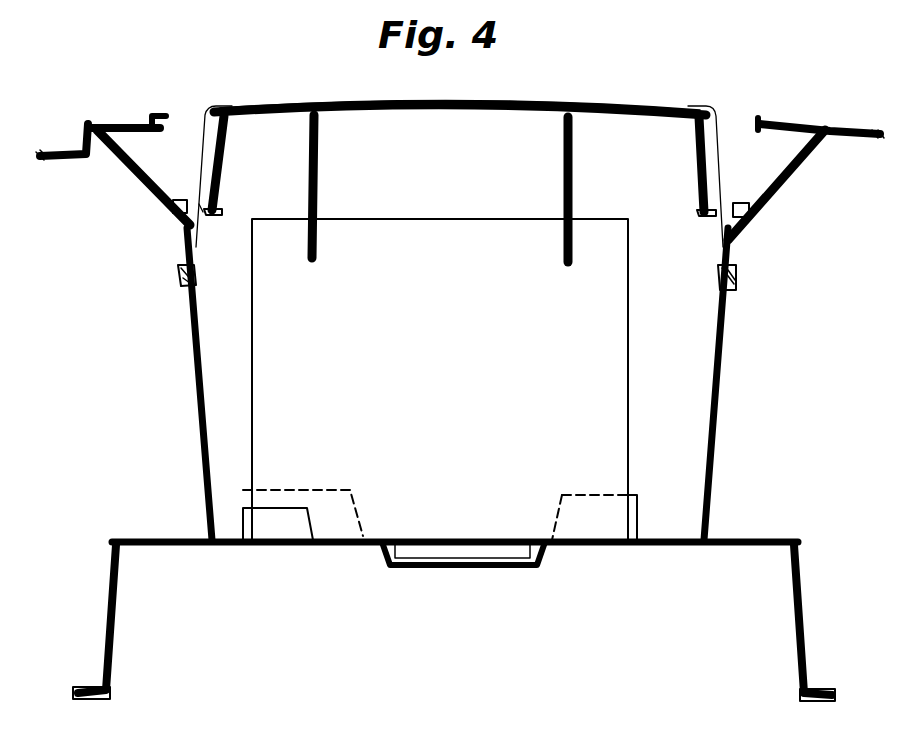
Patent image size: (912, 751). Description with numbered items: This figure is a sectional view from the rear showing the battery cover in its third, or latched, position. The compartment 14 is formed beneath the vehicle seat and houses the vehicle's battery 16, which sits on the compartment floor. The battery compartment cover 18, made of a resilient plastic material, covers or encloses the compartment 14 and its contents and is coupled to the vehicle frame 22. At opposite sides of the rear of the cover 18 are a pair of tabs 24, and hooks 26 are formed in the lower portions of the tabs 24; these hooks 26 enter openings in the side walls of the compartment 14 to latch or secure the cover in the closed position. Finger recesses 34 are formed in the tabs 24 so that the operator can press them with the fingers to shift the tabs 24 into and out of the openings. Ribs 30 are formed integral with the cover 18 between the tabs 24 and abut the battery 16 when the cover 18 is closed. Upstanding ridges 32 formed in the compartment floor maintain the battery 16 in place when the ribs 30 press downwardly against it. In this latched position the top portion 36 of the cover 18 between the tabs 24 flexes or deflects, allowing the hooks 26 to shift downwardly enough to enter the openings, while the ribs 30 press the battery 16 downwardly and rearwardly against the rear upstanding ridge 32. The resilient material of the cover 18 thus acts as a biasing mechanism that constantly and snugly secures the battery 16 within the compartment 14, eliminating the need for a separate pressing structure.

The compartment 14 is at (454, 464).
The battery 16 is at (426, 414).
The battery compartment cover 18 is at (598, 106).
The vehicle frame 22 is at (715, 470).
The tabs 24 is at (226, 162).
The hooks 26 is at (178, 278).
The ribs 30 is at (320, 180).
The upstanding ridges 32 is at (240, 520).
The finger recesses 34 is at (215, 145).
The top portion 36 is at (365, 100).